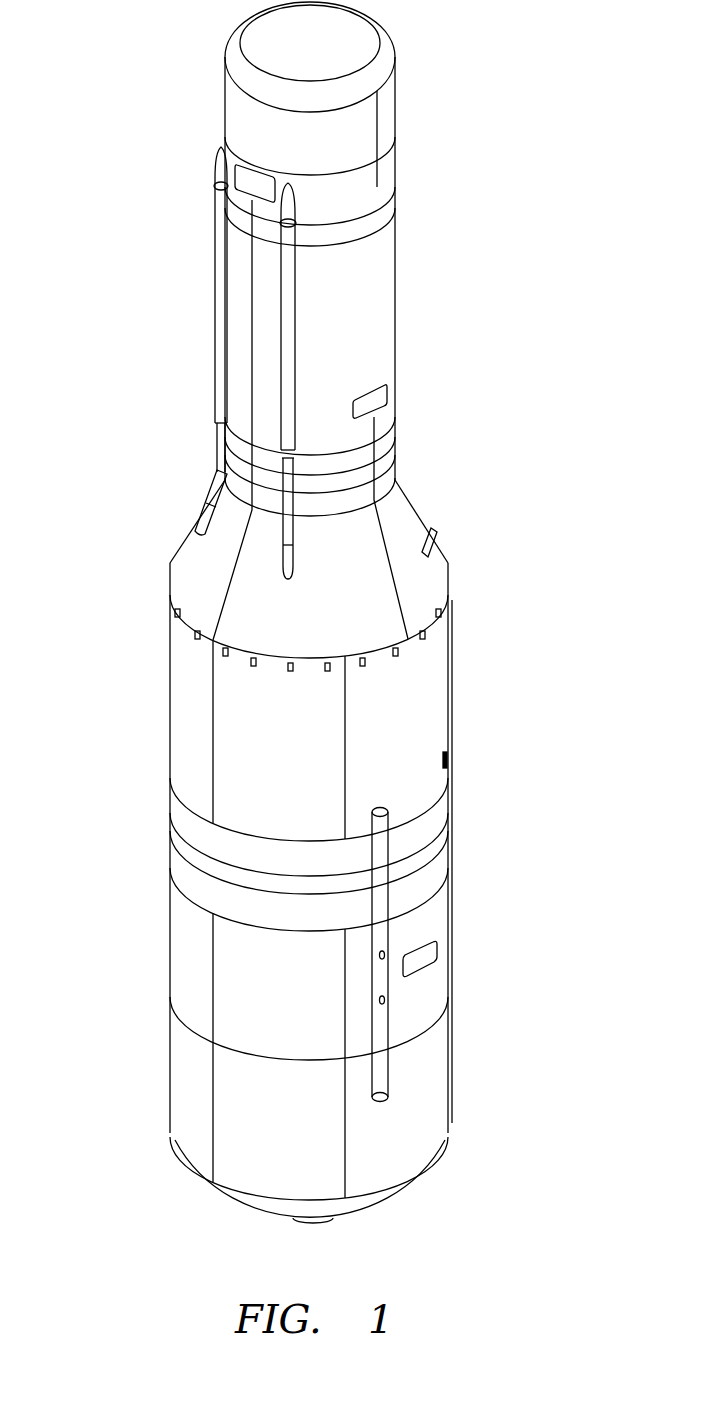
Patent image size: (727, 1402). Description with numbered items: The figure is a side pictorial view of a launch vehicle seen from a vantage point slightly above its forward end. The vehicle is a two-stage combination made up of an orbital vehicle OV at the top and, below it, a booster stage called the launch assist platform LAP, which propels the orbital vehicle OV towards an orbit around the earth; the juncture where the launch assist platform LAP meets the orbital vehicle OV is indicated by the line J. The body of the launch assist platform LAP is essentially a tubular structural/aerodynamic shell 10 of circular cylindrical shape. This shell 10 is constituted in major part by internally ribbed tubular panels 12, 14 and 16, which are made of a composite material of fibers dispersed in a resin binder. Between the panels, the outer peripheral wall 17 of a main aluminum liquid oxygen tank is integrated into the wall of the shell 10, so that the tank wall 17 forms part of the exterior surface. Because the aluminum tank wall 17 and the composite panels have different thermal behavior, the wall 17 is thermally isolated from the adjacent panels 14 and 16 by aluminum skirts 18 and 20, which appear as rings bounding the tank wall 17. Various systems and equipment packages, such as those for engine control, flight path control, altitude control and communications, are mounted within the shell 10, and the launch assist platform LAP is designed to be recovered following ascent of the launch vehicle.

The tubular structural/aerodynamic shell 10 is at (128, 607).
The orbital vehicle OV is at (470, 252).
The launch assist platform LAP is at (526, 740).
The juncture line J is at (452, 582).
The tubular panel 16 is at (452, 692).
The aluminum skirt 18 is at (452, 790).
The outer peripheral wall of liquid oxygen tank 17 is at (452, 814).
The aluminum skirt 20 is at (452, 845).
The tubular panel 14 is at (452, 952).
The tubular panel 12 is at (452, 1070).